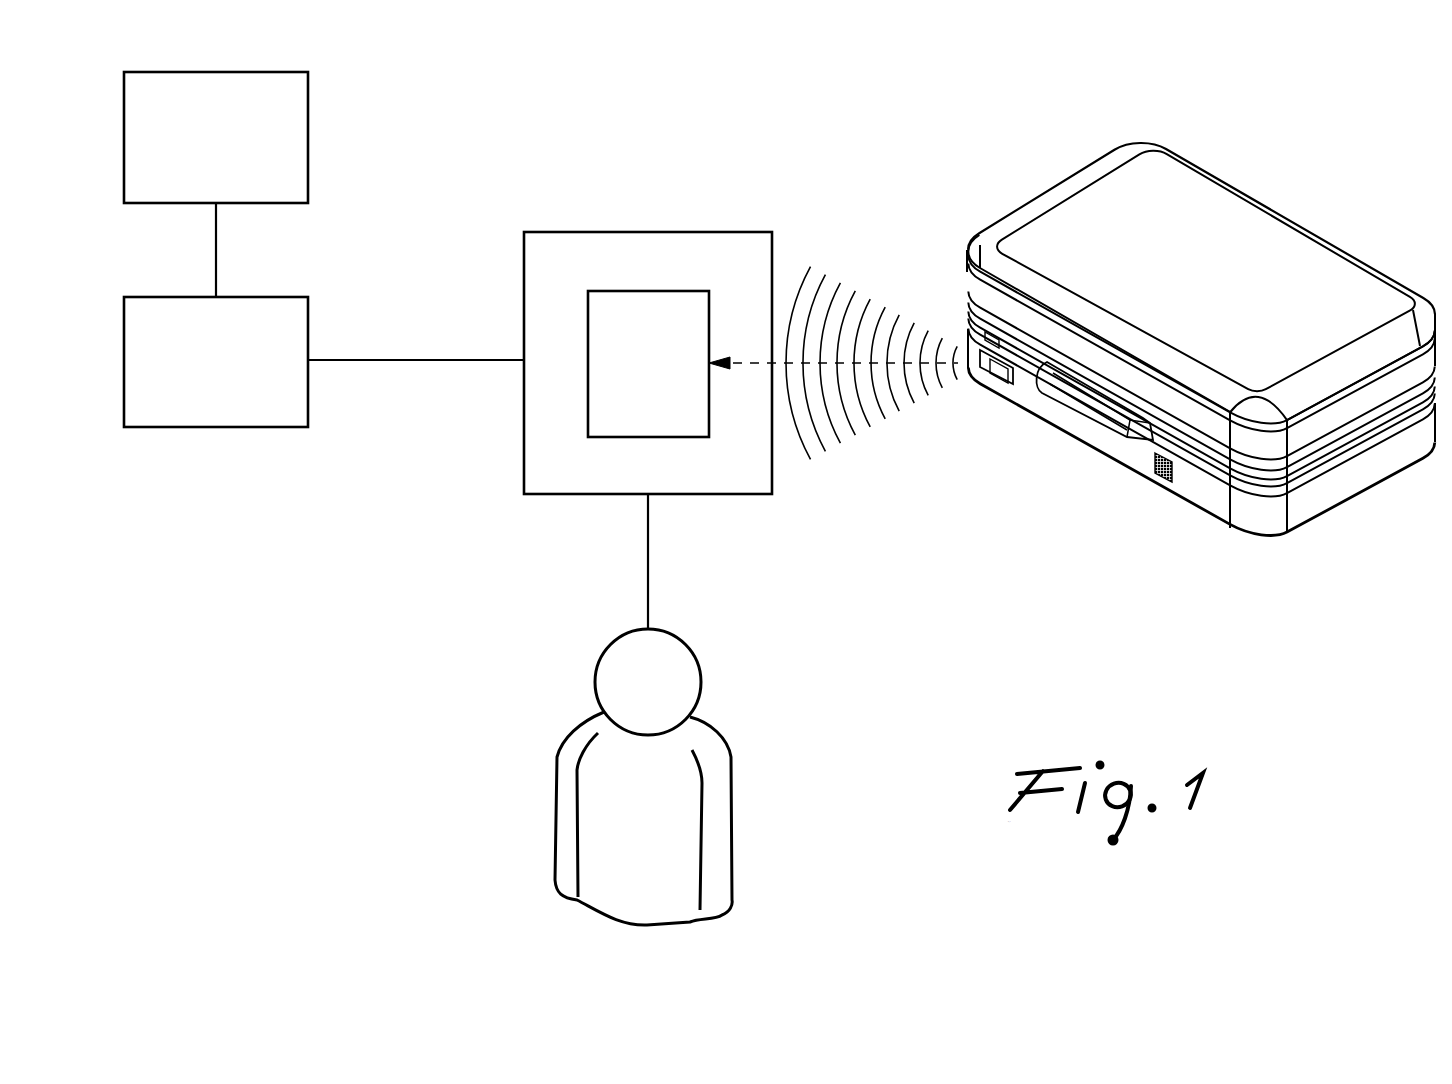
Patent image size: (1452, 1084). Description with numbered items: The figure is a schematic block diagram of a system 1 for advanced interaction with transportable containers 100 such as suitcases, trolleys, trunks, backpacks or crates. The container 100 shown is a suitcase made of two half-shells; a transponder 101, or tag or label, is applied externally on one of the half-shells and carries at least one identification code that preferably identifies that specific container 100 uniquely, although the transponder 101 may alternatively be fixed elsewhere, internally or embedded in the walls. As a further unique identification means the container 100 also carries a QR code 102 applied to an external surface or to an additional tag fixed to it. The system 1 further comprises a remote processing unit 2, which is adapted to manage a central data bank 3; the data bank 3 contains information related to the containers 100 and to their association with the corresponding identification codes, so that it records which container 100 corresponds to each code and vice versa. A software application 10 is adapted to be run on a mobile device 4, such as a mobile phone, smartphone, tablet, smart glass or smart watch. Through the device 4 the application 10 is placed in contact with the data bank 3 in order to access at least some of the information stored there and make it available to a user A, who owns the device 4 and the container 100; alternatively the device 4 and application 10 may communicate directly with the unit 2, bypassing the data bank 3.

The system 1 is at (867, 189).
The remote processing unit 2 is at (247, 132).
The central data bank 3 is at (230, 378).
The mobile device 4 is at (657, 232).
The software application 10 is at (636, 395).
The transportable container 100 is at (1263, 268).
The transponder 101 is at (995, 385).
The QR code 102 is at (1162, 481).
The user A is at (737, 797).